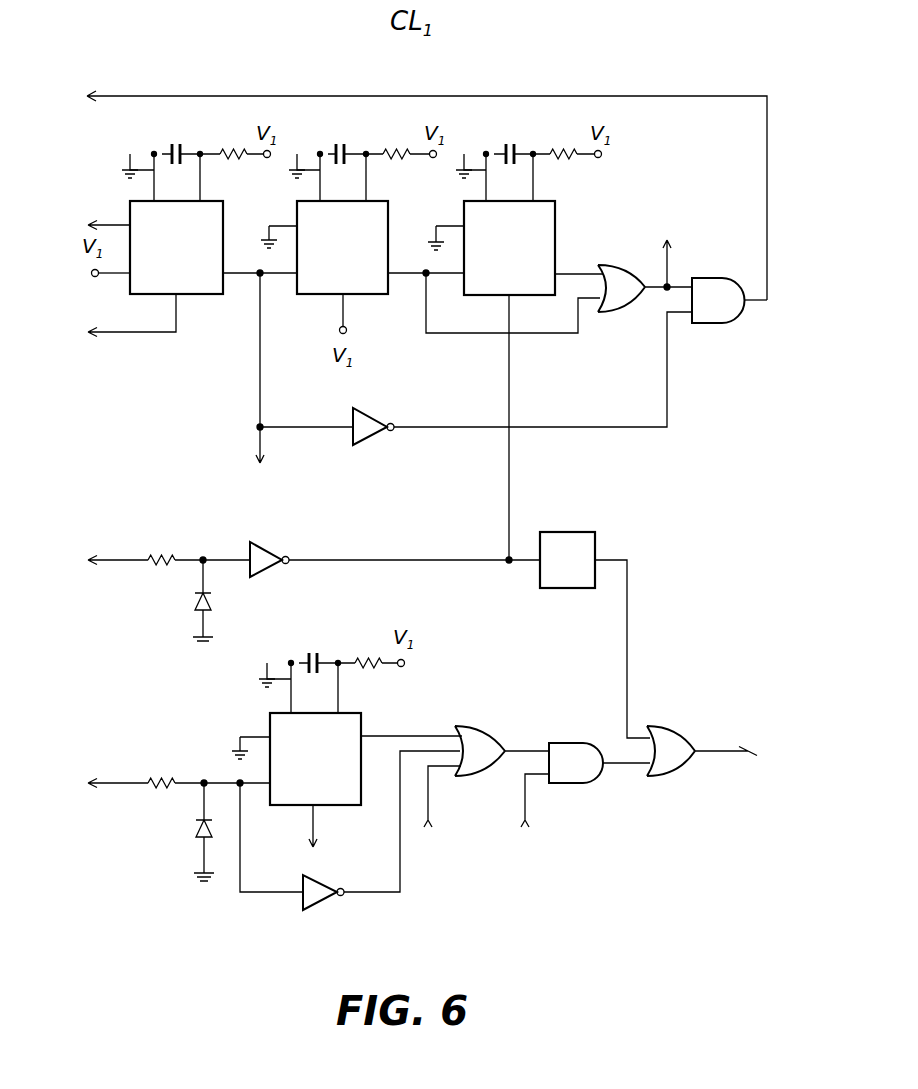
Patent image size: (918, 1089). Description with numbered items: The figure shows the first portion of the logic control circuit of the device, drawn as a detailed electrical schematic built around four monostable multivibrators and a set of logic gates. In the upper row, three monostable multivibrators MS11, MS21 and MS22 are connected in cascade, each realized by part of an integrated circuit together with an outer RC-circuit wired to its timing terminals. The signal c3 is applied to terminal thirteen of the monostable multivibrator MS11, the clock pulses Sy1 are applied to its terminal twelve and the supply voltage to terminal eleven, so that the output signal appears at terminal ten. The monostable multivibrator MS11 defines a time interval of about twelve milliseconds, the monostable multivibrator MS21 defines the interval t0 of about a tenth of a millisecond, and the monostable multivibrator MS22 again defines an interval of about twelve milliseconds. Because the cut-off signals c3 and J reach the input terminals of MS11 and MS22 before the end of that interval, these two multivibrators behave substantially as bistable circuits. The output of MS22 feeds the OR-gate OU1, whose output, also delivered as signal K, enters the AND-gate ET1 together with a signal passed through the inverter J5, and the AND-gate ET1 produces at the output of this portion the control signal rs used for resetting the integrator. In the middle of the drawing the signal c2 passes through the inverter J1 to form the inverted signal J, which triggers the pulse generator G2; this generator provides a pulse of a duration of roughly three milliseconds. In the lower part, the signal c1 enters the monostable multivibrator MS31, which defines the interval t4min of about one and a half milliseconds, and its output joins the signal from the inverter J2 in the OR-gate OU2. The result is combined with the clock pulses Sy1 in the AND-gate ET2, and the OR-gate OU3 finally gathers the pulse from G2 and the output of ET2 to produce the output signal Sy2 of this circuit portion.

The monostable multivibrator circuit MS11 is at (205, 296).
The monostable multivibrator MS21 is at (378, 296).
The monostable multivibrator MS22 is at (545, 240).
The monostable multivibrator MS31 is at (270, 718).
The OR-gate OU1 is at (622, 312).
The OR-gate OU2 is at (476, 735).
The OR-gate OU3 is at (672, 774).
The AND-gate ET1 is at (718, 323).
The AND-gate ET2 is at (565, 745).
The inverter J1 is at (262, 546).
The inverter J2 is at (318, 897).
The inverter J5 is at (365, 432).
The pulse generator G2 is at (567, 543).
The output K is at (666, 250).
The control signal for resetting the integrator rs is at (427, 182).
The input c1 is at (177, 769).
The input c2 is at (167, 547).
The cut off signal c3 is at (129, 315).
The clock pulses Sy1 is at (104, 211).
The output Sy2 is at (726, 722).
The cut off signal J-bar J is at (311, 536).
The time interval t0 is at (352, 141).
The time interval t4min is at (338, 649).